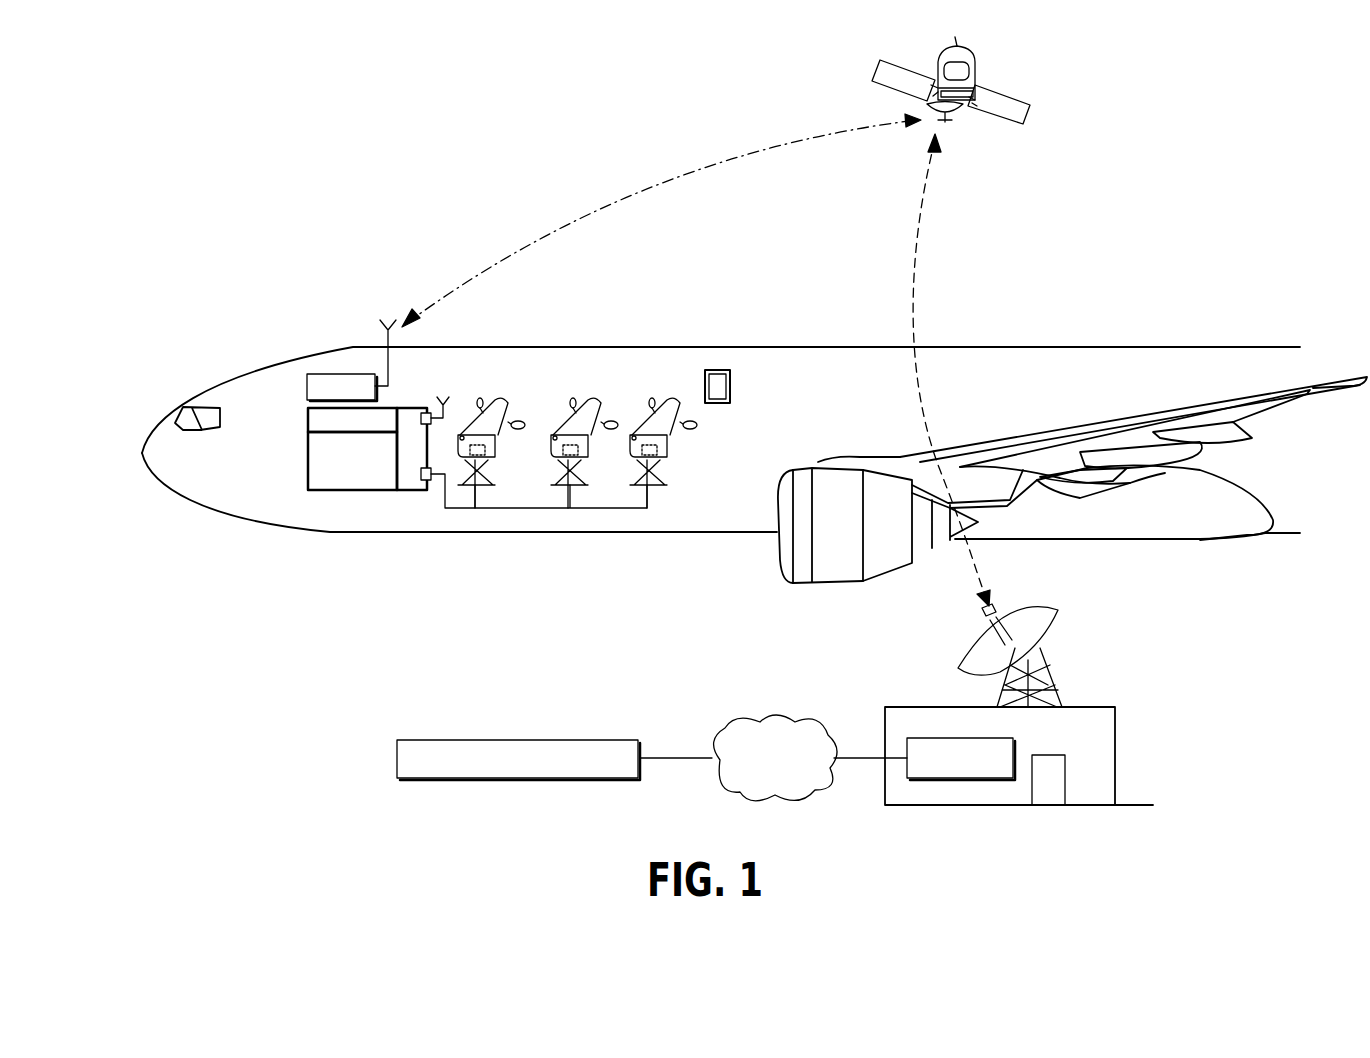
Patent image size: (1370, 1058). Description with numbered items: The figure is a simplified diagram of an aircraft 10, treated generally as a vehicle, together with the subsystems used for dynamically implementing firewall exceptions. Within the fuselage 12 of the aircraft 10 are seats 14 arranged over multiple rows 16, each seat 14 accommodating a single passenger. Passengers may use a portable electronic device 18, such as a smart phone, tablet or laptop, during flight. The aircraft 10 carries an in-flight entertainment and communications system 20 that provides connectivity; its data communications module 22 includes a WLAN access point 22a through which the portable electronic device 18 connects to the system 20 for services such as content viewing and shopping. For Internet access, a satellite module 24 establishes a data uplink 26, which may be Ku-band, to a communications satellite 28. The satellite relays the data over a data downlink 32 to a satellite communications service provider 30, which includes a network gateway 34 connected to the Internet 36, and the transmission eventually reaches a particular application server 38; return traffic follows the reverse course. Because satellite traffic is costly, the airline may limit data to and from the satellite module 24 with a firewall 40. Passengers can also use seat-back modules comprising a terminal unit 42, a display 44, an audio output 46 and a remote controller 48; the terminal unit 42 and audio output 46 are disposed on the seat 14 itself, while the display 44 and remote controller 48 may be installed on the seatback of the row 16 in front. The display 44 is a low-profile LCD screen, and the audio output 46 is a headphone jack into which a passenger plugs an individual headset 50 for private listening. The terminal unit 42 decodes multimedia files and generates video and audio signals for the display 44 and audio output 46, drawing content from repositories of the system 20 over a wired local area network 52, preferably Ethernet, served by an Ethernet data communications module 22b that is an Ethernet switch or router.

The aircraft 10 is at (686, 616).
The fuselage 12 is at (1011, 347).
The seat 14 is at (582, 473).
The rows 16 is at (460, 365).
The portable electronic device (PED) 18 is at (732, 386).
The in-flight entertainment and communications (IFEC) system 20 is at (340, 491).
The data communications module 22 is at (404, 408).
The WLAN access point 22a is at (430, 413).
The Ethernet data communications module 22b is at (431, 481).
The satellite module 24 is at (330, 374).
The data uplink 26 is at (625, 198).
The communications satellite 28 is at (968, 108).
The satellite communications service provider 30 is at (908, 707).
The data downlink 32 is at (917, 243).
The network gateway 34 is at (948, 779).
The Internet 36 is at (762, 717).
The application server 38 is at (508, 740).
The firewall 40 is at (308, 420).
The terminal unit 42 is at (596, 505).
The display 44 is at (503, 401).
The audio output 46 is at (564, 405).
The remote controller 48 is at (516, 442).
The headset 50 is at (582, 401).
The wired local area network 52 is at (502, 509).